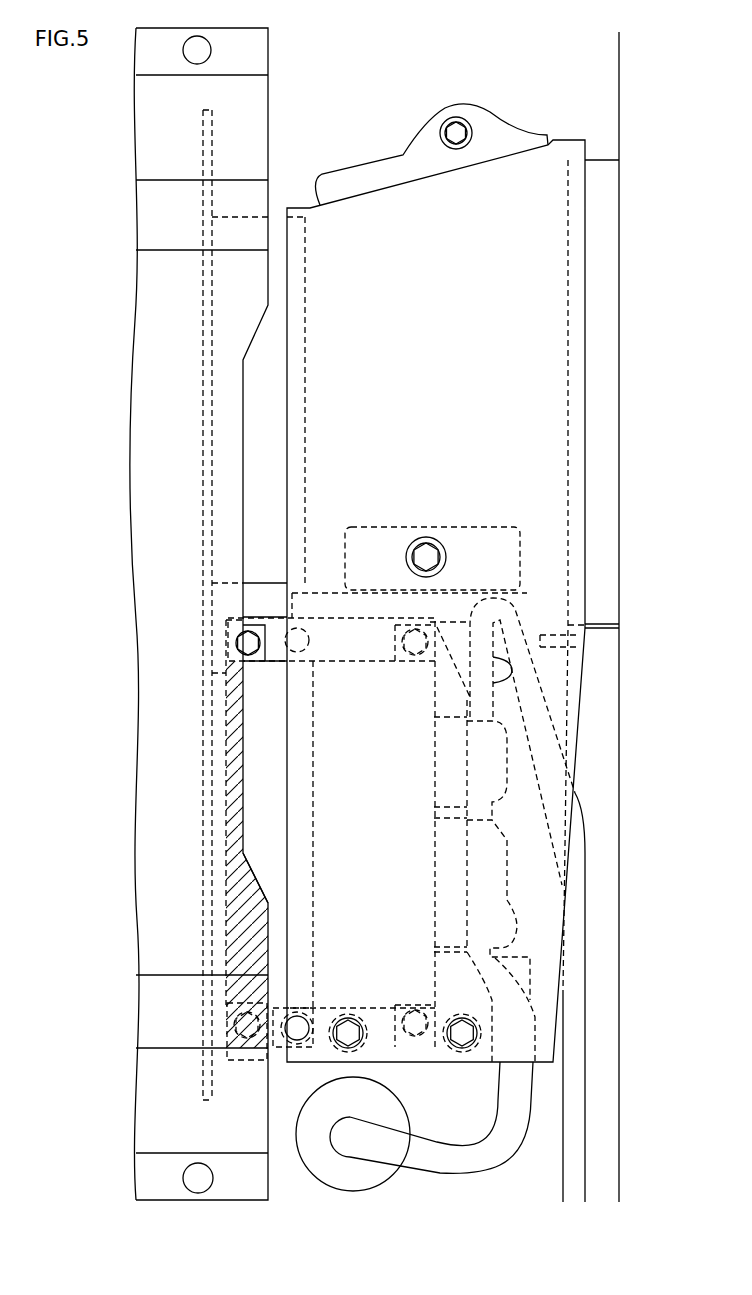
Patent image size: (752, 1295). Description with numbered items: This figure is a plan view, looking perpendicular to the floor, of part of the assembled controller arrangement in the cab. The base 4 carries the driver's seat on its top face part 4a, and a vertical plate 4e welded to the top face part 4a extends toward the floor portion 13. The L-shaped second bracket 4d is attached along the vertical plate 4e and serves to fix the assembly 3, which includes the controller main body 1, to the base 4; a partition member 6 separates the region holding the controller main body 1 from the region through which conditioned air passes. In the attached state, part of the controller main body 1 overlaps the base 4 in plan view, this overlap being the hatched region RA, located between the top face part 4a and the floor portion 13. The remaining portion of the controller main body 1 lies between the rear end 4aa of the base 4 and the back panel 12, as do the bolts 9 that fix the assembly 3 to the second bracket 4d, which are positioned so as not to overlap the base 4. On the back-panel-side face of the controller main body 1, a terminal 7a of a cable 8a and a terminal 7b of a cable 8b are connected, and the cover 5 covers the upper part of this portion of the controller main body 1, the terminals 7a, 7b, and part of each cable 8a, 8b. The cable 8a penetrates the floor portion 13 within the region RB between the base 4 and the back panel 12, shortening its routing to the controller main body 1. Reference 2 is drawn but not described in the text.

The controller main body 1 is at (268, 718).
The mounting member 2 is at (350, 635).
The assembly 3 is at (97, 582).
The base 4 is at (160, 543).
The top face part 4a is at (170, 770).
The rear end (one side of top face part) 4aa is at (253, 820).
The second bracket 4d is at (227, 1005).
The vertical plate 4e is at (203, 858).
The cover 5 is at (387, 215).
The partition member 6 is at (485, 557).
The terminal 7a is at (485, 882).
The terminal 7b is at (485, 765).
The cable 8a is at (510, 1103).
The cable 8b is at (530, 707).
The bolts (fixing part) 9 is at (300, 641).
The back panel 12 is at (622, 110).
The floor portion 13 is at (397, 1178).
The hatched region RA is at (233, 797).
The region RB is at (620, 1226).